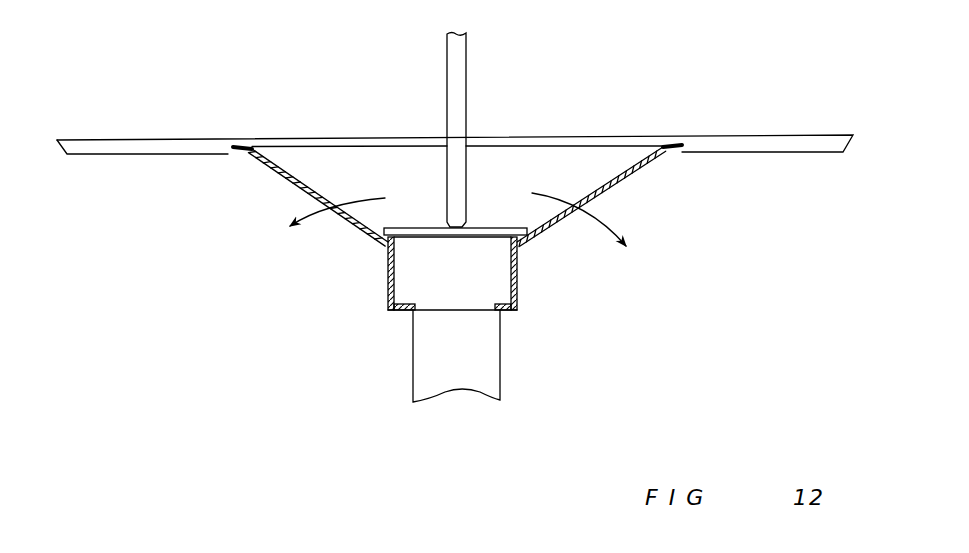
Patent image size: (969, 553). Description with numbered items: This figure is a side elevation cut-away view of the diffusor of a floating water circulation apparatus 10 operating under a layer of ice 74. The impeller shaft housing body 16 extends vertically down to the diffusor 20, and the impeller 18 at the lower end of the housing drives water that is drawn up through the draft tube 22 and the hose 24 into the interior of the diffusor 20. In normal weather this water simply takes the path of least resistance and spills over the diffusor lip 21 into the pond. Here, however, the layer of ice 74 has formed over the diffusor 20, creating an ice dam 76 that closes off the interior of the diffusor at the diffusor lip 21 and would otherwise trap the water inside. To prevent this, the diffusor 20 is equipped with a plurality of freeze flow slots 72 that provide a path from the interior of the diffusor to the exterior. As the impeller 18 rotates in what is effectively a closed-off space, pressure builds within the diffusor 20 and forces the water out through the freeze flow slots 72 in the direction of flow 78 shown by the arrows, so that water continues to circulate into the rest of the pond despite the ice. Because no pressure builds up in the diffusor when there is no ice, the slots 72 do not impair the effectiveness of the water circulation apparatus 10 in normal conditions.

The floating water circulation apparatus 10 is at (467, 428).
The impeller shaft housing body 16 is at (445, 78).
The impeller 18 is at (390, 245).
The diffusor 20 is at (368, 240).
The diffusor lip 21 is at (237, 152).
The draft tube 22 is at (390, 317).
The hose 24 is at (503, 360).
The freeze flow slots 72 is at (333, 220).
The layer of ice 74 is at (750, 132).
The ice dam 76 is at (563, 133).
The direction of flow 78 is at (272, 234).